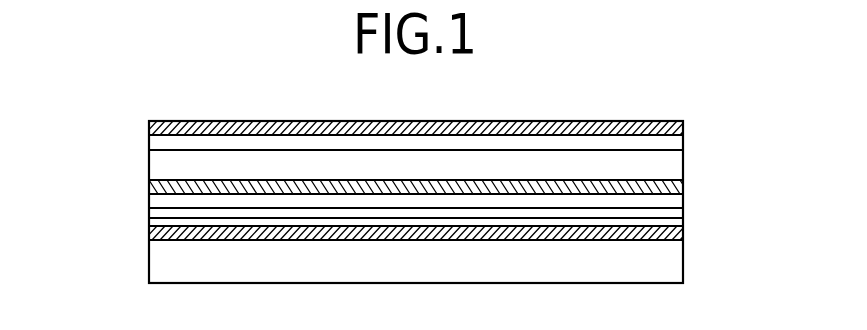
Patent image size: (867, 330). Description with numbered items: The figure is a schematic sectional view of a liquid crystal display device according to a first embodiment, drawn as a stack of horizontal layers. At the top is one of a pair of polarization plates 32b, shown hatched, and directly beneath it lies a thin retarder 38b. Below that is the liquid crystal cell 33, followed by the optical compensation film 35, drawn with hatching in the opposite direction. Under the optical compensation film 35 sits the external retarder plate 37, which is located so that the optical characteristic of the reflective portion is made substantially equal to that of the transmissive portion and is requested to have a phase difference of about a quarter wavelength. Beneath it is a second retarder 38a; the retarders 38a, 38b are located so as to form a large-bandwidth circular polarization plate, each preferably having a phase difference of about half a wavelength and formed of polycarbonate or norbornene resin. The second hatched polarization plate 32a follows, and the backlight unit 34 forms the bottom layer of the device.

The polarization plate 32b is at (683, 123).
The retarder 38b is at (156, 142).
The liquid crystal cell 33 is at (157, 163).
The optical compensation film 35 is at (683, 183).
The external retarder plate 37 is at (157, 198).
The retarder 38a is at (157, 218).
The polarization plate 32a is at (683, 228).
The backlight unit 34 is at (157, 263).